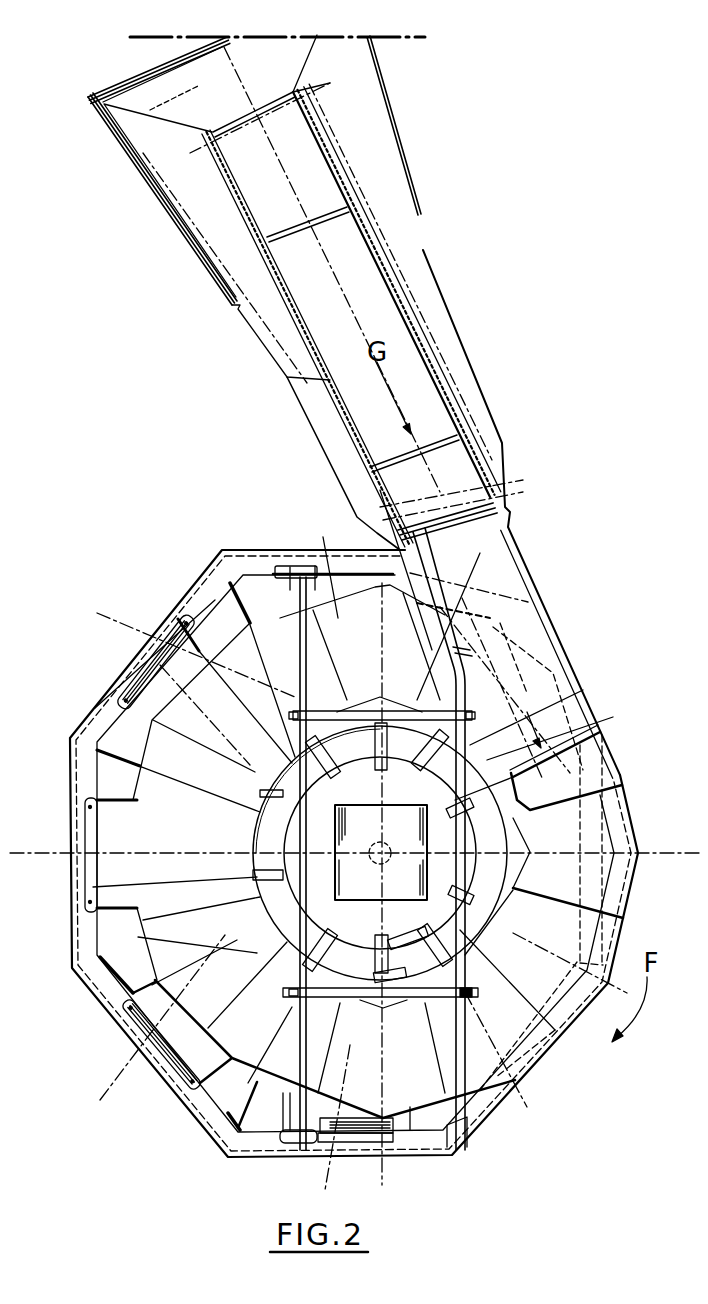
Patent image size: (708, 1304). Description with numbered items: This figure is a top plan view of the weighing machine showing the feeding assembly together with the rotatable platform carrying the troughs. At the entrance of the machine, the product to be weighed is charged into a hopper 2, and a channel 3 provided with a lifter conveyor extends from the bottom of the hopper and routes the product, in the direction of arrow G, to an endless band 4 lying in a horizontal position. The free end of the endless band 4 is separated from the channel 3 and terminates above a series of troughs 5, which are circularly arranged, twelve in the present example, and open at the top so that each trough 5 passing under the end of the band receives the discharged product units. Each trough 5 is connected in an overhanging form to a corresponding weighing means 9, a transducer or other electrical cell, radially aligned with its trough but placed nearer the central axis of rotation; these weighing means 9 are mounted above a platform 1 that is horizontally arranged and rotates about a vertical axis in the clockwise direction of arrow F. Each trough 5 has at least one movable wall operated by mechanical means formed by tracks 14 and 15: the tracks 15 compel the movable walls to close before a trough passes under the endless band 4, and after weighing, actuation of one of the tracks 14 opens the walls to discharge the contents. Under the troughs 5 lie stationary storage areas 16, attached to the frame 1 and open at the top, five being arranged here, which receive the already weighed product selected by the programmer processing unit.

The platform 1 is at (282, 597).
The hopper 2 is at (196, 213).
The channel 3 is at (385, 305).
The endless band 4 is at (545, 643).
The troughs 5 is at (360, 607).
The weighing means 9 is at (338, 768).
The tracks 14 is at (135, 728).
The tracks 15 is at (477, 767).
The storage areas 16 is at (188, 634).